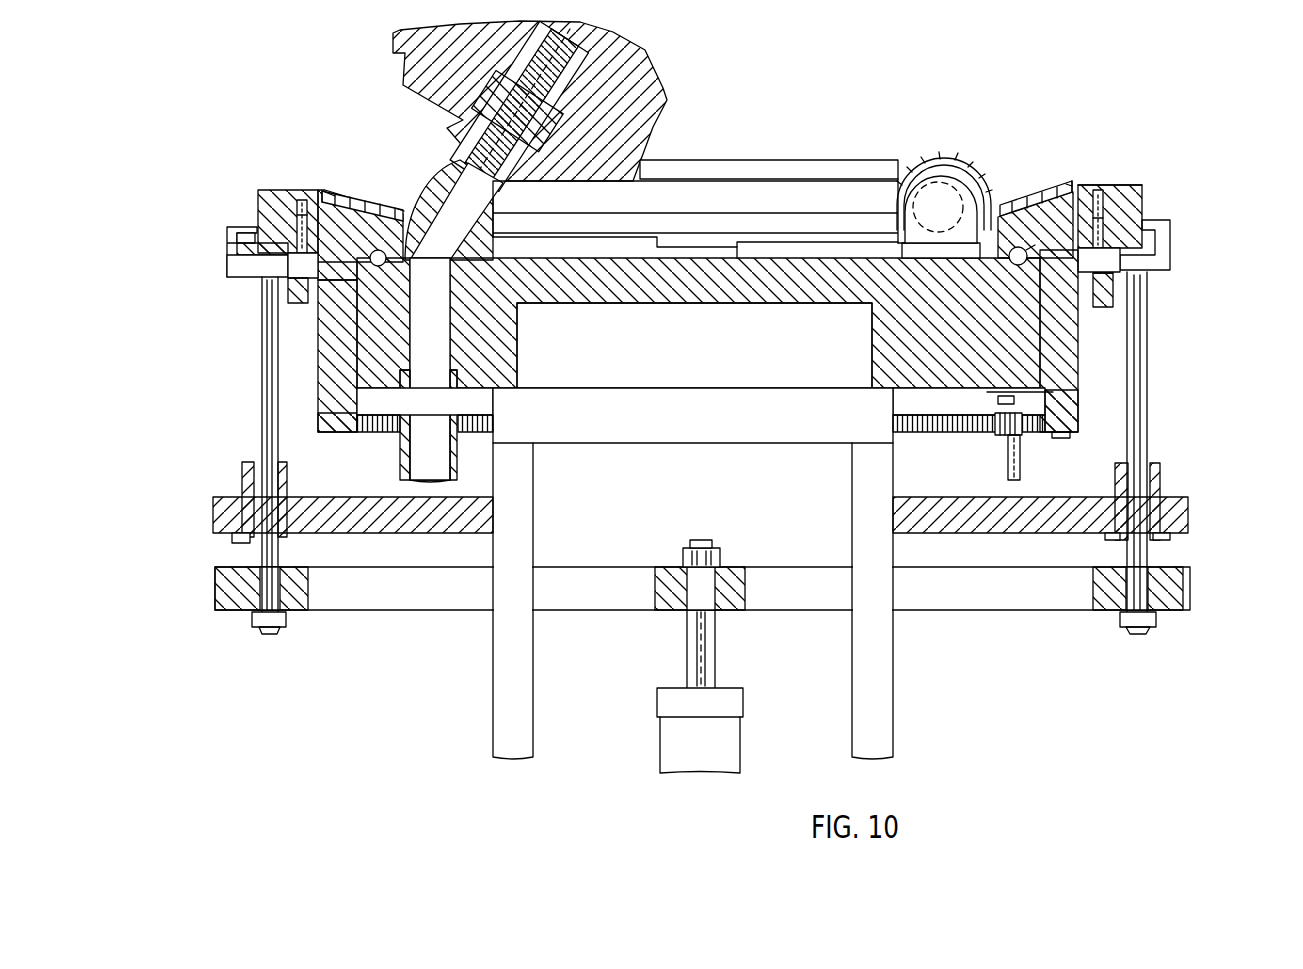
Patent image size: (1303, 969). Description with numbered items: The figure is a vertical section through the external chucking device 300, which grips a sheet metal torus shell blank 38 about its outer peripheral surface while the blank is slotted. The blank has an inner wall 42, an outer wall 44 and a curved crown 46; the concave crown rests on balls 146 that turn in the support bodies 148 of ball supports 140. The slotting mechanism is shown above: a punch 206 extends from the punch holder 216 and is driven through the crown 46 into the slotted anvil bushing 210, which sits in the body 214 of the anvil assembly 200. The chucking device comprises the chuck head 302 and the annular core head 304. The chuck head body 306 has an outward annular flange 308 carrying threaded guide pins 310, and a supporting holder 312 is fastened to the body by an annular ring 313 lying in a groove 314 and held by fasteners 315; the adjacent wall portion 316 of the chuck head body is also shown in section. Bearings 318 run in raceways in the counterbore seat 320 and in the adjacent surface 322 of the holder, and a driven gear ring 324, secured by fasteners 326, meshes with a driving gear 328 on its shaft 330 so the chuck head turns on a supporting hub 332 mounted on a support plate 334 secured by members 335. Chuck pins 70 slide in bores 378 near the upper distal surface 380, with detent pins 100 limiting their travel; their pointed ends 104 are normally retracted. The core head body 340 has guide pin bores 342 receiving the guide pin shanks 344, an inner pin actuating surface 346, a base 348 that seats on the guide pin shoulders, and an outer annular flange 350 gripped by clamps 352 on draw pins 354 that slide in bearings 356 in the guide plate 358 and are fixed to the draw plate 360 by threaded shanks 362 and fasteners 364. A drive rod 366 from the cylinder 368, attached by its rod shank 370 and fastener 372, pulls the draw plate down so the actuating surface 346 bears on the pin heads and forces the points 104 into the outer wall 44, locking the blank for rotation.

The torus shell blank 38 is at (933, 157).
The inner wall 42 is at (492, 208).
The outer wall 44 is at (403, 227).
The crown 46 is at (848, 158).
The chuck pin 70 is at (357, 190).
The detent pin 100 is at (323, 193).
The conical pointed end 104 is at (398, 210).
The ball support 140 is at (896, 223).
The ball 146 is at (940, 172).
The support body 148 is at (923, 235).
The anvil assembly 200 is at (497, 248).
The punch 206 is at (513, 107).
The anvil bushing 210 is at (435, 188).
The anvil body 214 is at (480, 247).
The punch holder 216 is at (563, 34).
The external chucking device 300 is at (1173, 312).
The chuck head 302 is at (1082, 368).
The core head 304 is at (1147, 187).
The chuck head body 306 is at (1067, 388).
The annular flange 308 is at (1117, 287).
The core head guide pin 310 is at (300, 265).
The supporting holder 312 is at (900, 393).
The annular ring 313 is at (1022, 387).
The groove 314 is at (347, 392).
The fastener 315 is at (1005, 399).
The wall 316 is at (1040, 335).
The bearing 318 is at (377, 267).
The counterbore seat 320 is at (1098, 282).
The adjacent surface 322 is at (803, 262).
The driven gear ring 324 is at (913, 435).
The fastener 326 is at (1058, 438).
The driving gear 328 is at (1000, 425).
The shaft 330 is at (1020, 470).
The supporting hub 332 is at (845, 352).
The support plate 334 is at (634, 432).
The securing member 335 is at (493, 663).
The core head body 340 is at (1142, 188).
The guide pin bore 342 is at (299, 198).
The guide pin shank 344 is at (297, 215).
The pin actuating surface 346 is at (328, 253).
The base 348 is at (245, 265).
The outer annular flange 350 is at (240, 232).
The clamp 352 is at (230, 240).
The draw pin 354 is at (262, 343).
The bearing 356 is at (242, 470).
The guide plate 358 is at (315, 500).
The draw plate 360 is at (343, 612).
The threaded shank 362 is at (262, 580).
The threaded fastener 364 is at (260, 625).
The drive rod 366 is at (690, 632).
The cylinder 368 is at (735, 730).
The rod shank 370 is at (688, 595).
The threaded fastener 372 is at (698, 548).
The chuck pin bore 378 is at (1024, 252).
The upper distal surface 380 is at (377, 197).